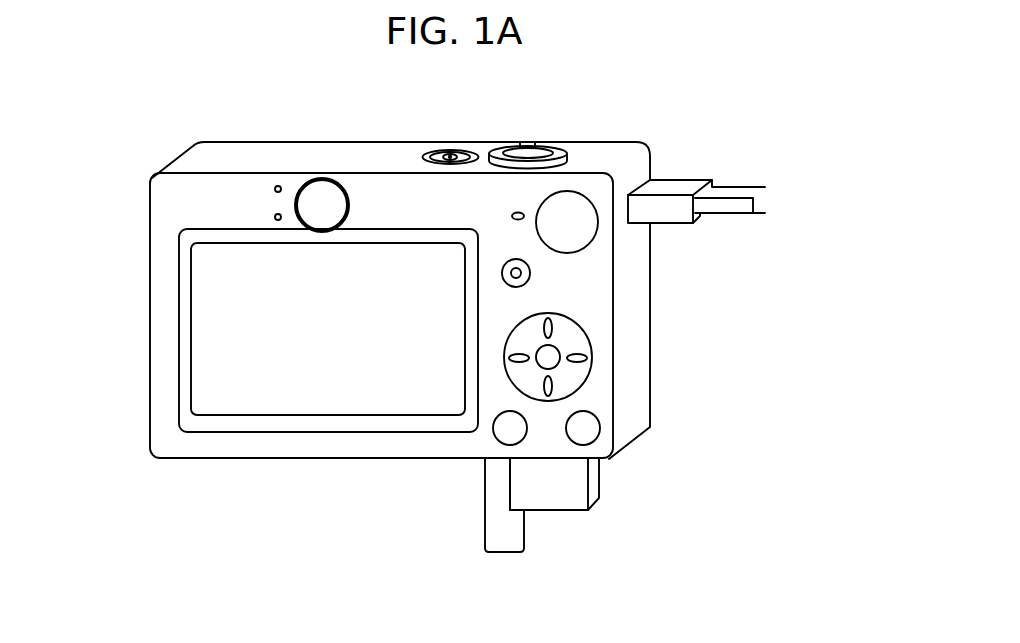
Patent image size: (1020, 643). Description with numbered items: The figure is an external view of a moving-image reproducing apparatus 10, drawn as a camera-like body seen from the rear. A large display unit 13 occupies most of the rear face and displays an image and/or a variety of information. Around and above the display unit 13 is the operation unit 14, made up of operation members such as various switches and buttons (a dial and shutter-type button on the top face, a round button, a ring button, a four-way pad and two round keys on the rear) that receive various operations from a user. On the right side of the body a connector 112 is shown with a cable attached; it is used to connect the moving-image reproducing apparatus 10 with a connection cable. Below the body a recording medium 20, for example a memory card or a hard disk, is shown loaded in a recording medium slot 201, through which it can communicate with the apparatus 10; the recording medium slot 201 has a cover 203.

The moving-image reproducing apparatus 10 is at (248, 461).
The display unit 13 is at (240, 228).
The operation unit 14 is at (452, 152).
The connector 112 is at (649, 179).
The recording medium 20 is at (563, 498).
The recording medium slot 201 is at (530, 460).
The cover 203 is at (482, 538).